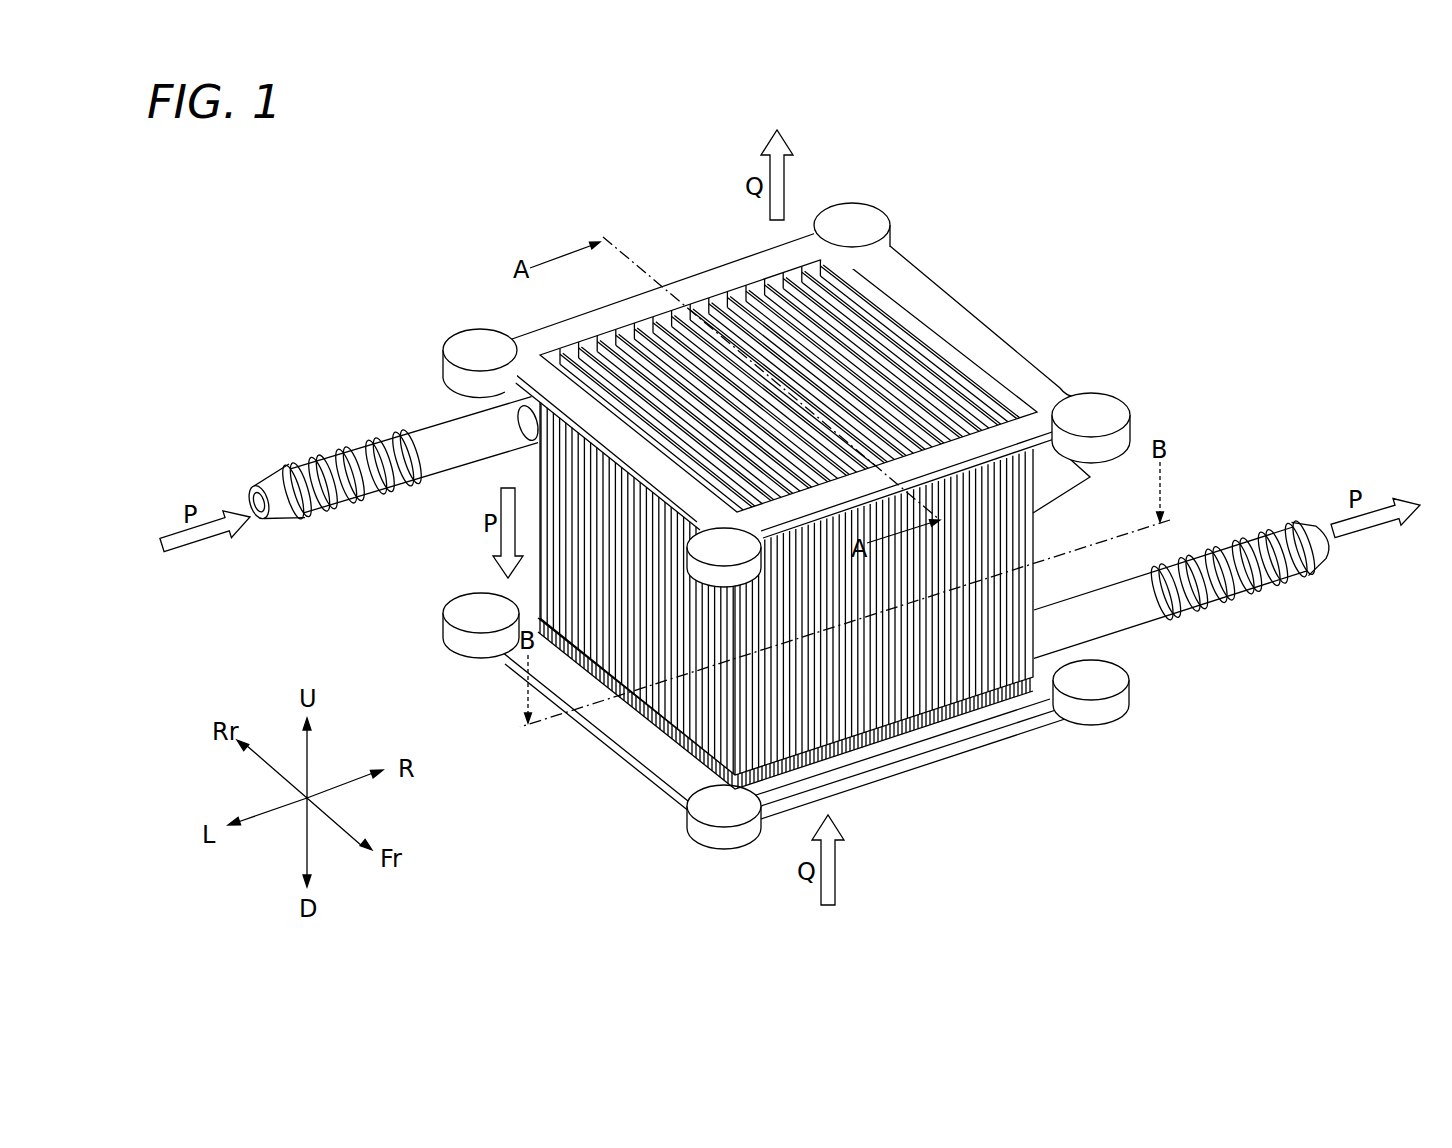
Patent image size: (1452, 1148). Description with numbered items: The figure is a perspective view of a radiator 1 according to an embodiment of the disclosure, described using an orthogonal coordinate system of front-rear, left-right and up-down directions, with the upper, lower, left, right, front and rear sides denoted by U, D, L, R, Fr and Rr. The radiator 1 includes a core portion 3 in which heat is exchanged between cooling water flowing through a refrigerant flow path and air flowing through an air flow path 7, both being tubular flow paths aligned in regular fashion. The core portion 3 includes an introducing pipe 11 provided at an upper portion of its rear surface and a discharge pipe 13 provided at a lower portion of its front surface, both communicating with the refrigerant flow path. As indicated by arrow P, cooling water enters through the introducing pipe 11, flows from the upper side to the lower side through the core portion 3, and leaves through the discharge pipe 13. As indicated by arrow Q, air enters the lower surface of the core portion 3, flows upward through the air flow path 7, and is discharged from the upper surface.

The radiator 1 is at (989, 246).
The core portion 3 is at (977, 333).
The air flow path 7 is at (748, 327).
The introducing pipe 11 is at (347, 450).
The discharge pipe 13 is at (1237, 543).